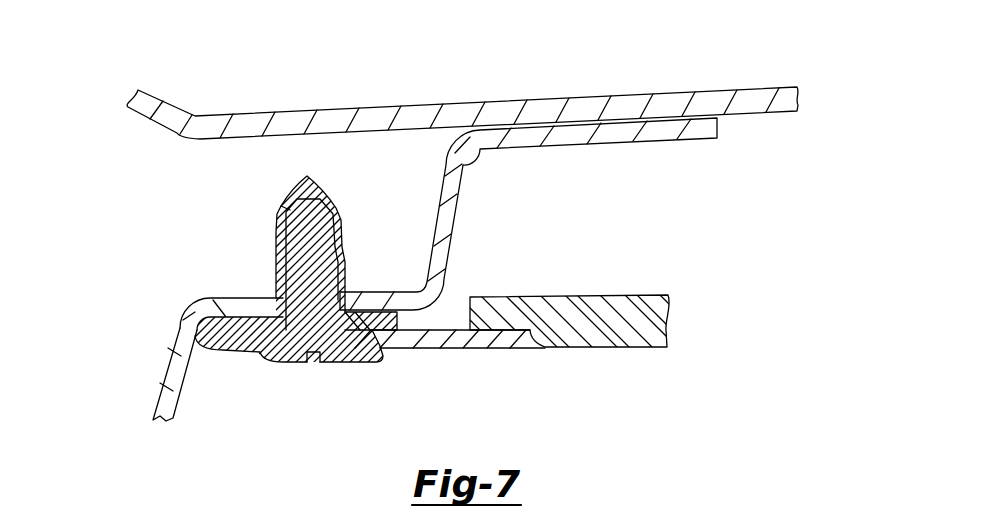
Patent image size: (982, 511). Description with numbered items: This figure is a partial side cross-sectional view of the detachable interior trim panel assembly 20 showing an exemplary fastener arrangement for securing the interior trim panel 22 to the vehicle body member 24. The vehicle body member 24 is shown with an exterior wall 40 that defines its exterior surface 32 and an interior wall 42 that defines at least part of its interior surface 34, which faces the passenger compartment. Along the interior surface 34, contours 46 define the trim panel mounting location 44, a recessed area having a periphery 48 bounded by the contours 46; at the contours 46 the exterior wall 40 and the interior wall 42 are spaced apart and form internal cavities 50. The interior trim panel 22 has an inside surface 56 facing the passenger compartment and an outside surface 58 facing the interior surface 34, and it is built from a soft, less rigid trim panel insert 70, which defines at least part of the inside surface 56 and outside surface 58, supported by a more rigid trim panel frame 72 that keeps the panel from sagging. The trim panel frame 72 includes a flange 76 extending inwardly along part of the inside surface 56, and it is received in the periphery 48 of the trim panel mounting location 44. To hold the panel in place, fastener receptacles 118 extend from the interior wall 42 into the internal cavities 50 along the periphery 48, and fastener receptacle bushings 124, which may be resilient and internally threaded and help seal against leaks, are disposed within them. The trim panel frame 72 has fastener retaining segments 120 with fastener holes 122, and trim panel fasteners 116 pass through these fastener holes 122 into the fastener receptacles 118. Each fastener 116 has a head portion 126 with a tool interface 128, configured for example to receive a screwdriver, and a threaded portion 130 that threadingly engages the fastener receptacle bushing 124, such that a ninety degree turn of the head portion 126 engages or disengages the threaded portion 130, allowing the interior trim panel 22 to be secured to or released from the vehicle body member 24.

The detachable interior trim panel assembly 20 is at (90, 107).
The interior trim panel 22 is at (683, 380).
The vehicle body member 24 is at (158, 88).
The exterior surface 32 is at (437, 104).
The interior surface 34 is at (757, 120).
The exterior wall 40 is at (666, 100).
The interior wall 42 is at (165, 391).
The trim panel mounting location 44 is at (683, 240).
The contours 46 is at (205, 411).
The periphery 48 is at (459, 207).
The internal cavities 50 is at (170, 252).
The inside surface 56 is at (597, 349).
The outside surface 58 is at (594, 297).
The trim panel insert 70 is at (660, 311).
The trim panel frame 72 is at (430, 367).
The flange 76 is at (492, 349).
The trim panel fasteners 116 is at (343, 250).
The fastener receptacles 118 is at (281, 302).
The fastener retaining segments 120 is at (218, 343).
The fastener holes 122 is at (343, 337).
The fastener receptacle bushings 124 is at (309, 175).
The head portion 126 is at (283, 364).
The tool interface 128 is at (311, 367).
The threaded portion 130 is at (308, 230).